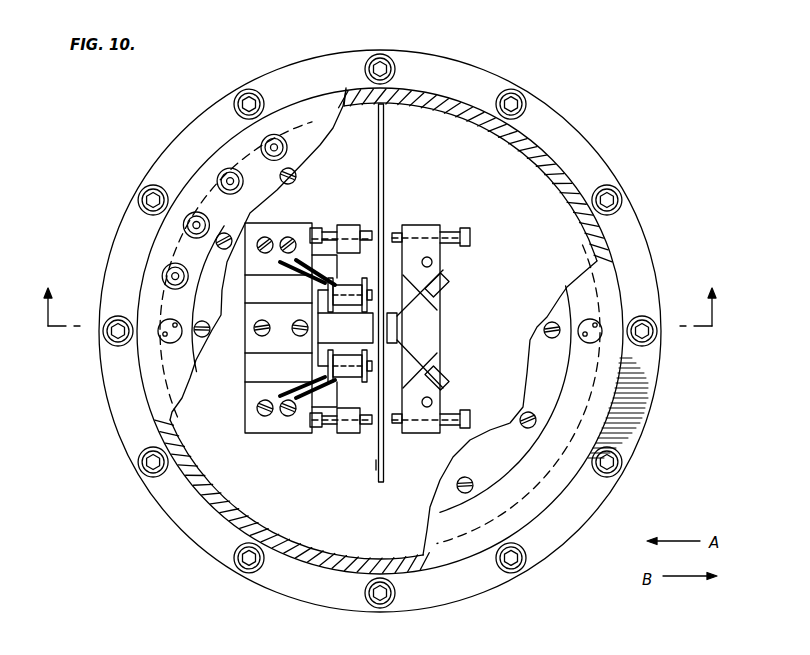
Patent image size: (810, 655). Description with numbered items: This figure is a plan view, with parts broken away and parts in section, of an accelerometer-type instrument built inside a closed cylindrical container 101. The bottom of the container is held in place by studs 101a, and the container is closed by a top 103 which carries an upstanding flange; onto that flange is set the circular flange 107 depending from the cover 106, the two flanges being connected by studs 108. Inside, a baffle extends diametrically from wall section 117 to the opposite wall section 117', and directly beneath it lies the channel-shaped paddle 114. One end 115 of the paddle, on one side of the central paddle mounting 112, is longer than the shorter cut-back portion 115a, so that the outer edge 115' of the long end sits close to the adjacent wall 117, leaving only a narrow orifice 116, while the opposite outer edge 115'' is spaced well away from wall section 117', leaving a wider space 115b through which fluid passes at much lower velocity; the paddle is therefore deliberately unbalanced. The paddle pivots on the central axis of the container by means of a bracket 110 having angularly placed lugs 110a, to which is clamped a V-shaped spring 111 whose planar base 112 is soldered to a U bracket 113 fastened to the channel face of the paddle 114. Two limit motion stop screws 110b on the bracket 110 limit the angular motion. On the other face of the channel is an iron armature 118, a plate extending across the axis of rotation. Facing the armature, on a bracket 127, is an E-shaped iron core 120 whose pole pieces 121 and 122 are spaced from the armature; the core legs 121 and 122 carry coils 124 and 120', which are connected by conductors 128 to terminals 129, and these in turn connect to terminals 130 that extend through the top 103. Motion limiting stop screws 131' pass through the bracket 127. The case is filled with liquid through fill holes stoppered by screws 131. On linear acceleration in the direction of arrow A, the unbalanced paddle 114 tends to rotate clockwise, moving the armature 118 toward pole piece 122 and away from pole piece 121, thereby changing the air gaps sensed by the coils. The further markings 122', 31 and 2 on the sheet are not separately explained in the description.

The container 101 is at (453, 92).
The studs 101a is at (141, 190).
The top 103 is at (548, 194).
The cover 106 is at (550, 379).
The circular flange 107 is at (533, 444).
The studs 108 is at (192, 372).
The bracket 110 is at (438, 333).
The angularly placed lugs 110a is at (441, 283).
The limit motion stop screws 110b is at (464, 234).
The V-shaped spring 111 is at (442, 304).
The planar base 112 is at (400, 323).
The U bracket 113 is at (426, 344).
The paddle 114 is at (384, 188).
The long end of the paddle 115 is at (407, 293).
The outer edge of the paddle 115' is at (415, 58).
The opposite outer edge of the paddle 115'' is at (362, 495).
The shorter cut-back portion 115a is at (379, 465).
The space 115b is at (370, 535).
The narrow orifice 116 is at (375, 97).
The wall section 117 is at (460, 165).
The wall section 117' is at (298, 503).
The armature 118 is at (363, 278).
The E-shaped iron core 120 is at (309, 328).
The coil 120' is at (298, 453).
The pole piece 121 is at (330, 279).
The pole piece 122 is at (294, 324).
The lower frame screw 122' is at (349, 389).
The coil 124 is at (342, 282).
The bracket 127 is at (250, 346).
The conductors 128 is at (300, 278).
The terminals 129 is at (288, 237).
The terminals 130 is at (164, 266).
The screws 131 is at (142, 312).
The motion limiting stop screws 131' is at (337, 327).
The locating pin 31 is at (588, 320).
The section line 2- 2 is at (378, 298).